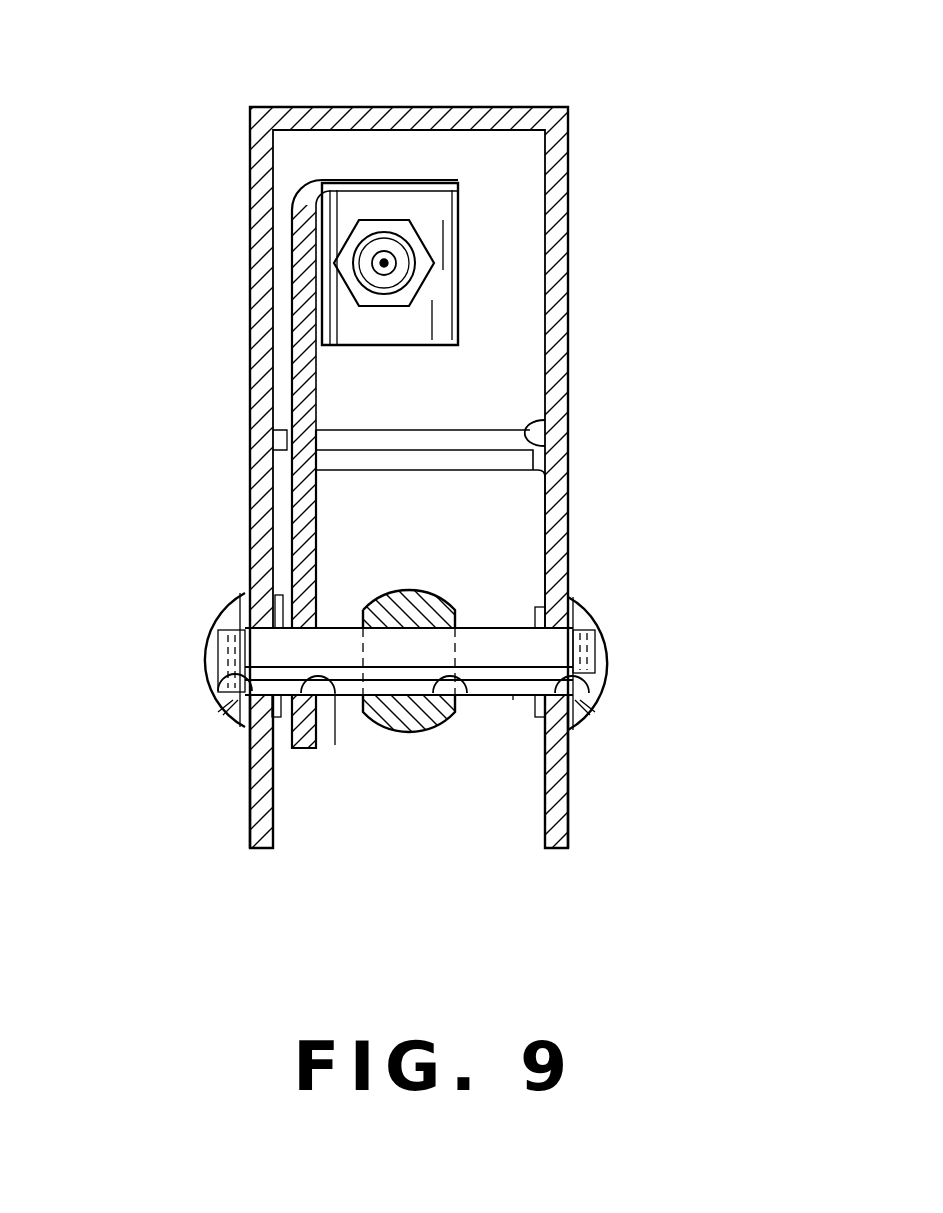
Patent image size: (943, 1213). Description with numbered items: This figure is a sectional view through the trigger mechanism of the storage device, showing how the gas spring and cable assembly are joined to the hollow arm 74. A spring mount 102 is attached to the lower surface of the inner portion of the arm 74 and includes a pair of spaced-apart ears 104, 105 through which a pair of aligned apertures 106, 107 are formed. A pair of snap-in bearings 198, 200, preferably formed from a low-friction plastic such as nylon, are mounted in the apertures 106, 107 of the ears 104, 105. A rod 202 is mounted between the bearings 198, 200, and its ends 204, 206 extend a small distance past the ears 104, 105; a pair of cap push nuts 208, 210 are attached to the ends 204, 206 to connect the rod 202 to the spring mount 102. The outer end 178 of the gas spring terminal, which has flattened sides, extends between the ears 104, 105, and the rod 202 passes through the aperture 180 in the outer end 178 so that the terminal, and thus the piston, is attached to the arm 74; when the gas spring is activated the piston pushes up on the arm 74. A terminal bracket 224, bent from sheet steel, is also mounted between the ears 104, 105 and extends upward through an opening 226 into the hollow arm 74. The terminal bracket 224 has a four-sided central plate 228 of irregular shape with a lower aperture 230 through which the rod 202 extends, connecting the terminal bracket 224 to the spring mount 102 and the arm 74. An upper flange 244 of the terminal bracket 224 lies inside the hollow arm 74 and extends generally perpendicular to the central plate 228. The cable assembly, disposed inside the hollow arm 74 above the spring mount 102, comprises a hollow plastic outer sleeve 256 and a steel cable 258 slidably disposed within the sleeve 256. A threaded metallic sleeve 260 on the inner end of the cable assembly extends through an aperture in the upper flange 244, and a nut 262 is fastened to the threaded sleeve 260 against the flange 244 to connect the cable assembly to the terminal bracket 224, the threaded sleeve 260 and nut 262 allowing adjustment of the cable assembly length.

The arm 74 is at (565, 155).
The spring mount 102 is at (570, 522).
The ear 104 is at (566, 840).
The ear 105 is at (248, 818).
The aperture 106 is at (598, 697).
The aperture 107 is at (218, 697).
The outer end 178 is at (408, 728).
The aperture 180 is at (466, 700).
The snap-in bearing 198 is at (283, 607).
The snap-in bearing 200 is at (535, 617).
The rod 202 is at (513, 690).
The end 204 is at (218, 607).
The end 206 is at (602, 604).
The cap push nut 208 is at (205, 655).
The cap push nut 210 is at (608, 662).
The terminal bracket 224 is at (290, 292).
The opening 226 is at (530, 430).
The central plate 228 is at (297, 368).
The lower aperture 230 is at (338, 688).
The upper flange 244 is at (360, 197).
The outer sleeve 256 is at (398, 257).
The cable 258 is at (395, 272).
The threaded sleeve 260 is at (378, 295).
The nut 262 is at (397, 218).